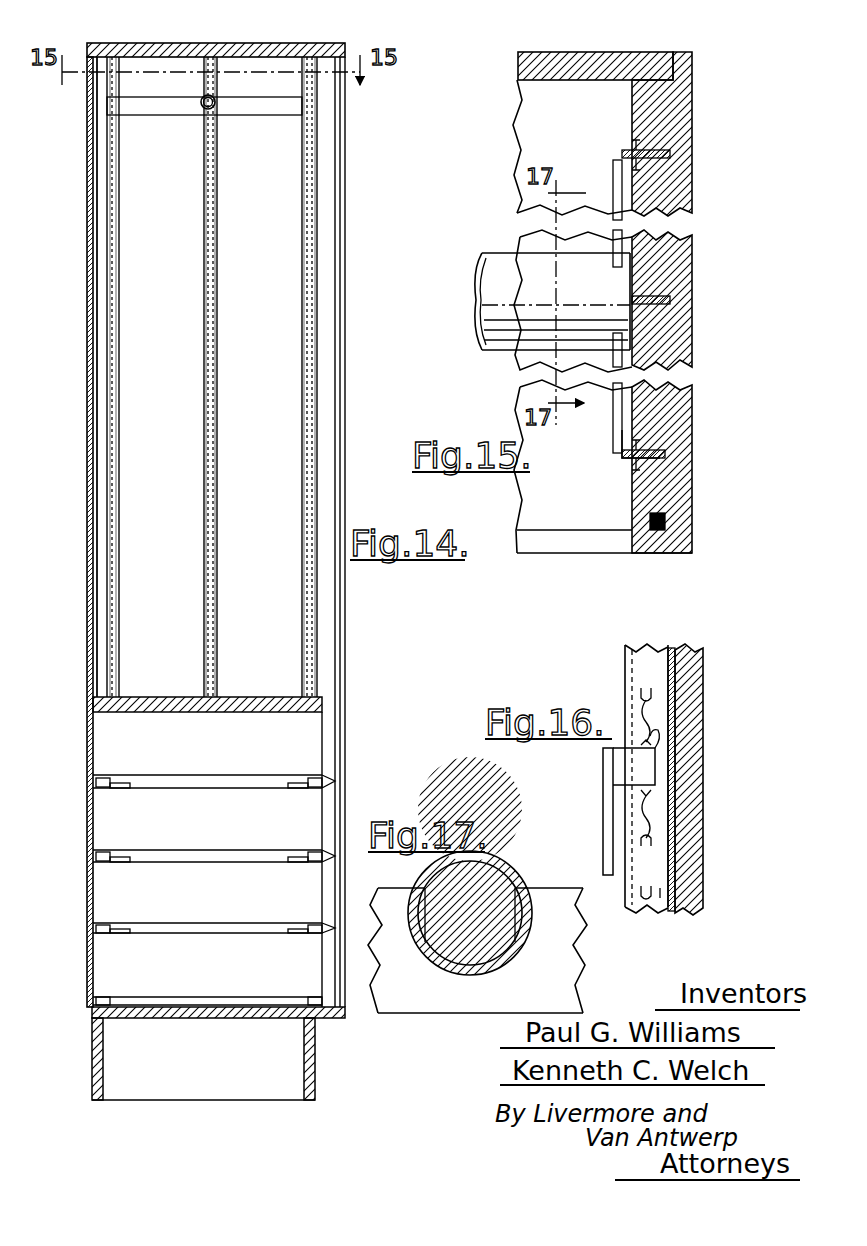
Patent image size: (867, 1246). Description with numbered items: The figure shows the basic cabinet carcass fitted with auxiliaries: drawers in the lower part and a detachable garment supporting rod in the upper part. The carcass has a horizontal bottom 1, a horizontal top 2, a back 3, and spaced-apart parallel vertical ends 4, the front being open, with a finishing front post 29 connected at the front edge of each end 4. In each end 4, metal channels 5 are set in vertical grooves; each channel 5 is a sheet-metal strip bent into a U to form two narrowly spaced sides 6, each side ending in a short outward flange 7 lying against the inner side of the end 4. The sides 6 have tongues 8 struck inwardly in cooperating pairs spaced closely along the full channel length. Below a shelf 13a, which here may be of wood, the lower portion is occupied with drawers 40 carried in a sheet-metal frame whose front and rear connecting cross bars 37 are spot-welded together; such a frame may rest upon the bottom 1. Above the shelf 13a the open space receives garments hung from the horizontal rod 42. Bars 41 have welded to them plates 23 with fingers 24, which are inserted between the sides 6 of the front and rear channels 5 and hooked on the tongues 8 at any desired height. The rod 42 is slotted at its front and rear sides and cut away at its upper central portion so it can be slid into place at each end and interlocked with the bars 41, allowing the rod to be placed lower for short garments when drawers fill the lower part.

In FIG. 14, the horizontal bottom 1 is at (190, 1012).
In FIG. 14, the horizontal top 2 is at (254, 50).
In FIG. 14, the back 3 is at (90, 340).
In FIG. 15, the back 3 is at (575, 54).
In FIG. 14, the vertical ends 4 is at (140, 245).
In FIG. 15, the vertical ends 4 is at (693, 100).
In FIG. 16, the vertical ends 4 is at (700, 804).
In FIG. 14, the metal channels 5 is at (113, 430).
In FIG. 15, the metal channels 5 is at (670, 153).
In FIG. 16, the metal channels 5 is at (676, 852).
In FIG. 15, the sides 6 is at (640, 150).
In FIG. 16, the sides 6 is at (660, 902).
In FIG. 14, the flange 7 is at (216, 318).
In FIG. 15, the flange 7 is at (621, 146).
In FIG. 16, the flange 7 is at (646, 778).
In FIG. 16, the tongues 8 is at (645, 902).
In FIG. 14, the shelf 13a is at (246, 697).
In FIG. 15, the plates 23 is at (628, 460).
In FIG. 16, the plates 23 is at (640, 767).
In FIG. 16, the fingers 24 is at (665, 740).
In FIG. 14, the finishing front post 29 is at (340, 205).
In FIG. 14, the cross bars 37 is at (108, 790).
In FIG. 14, the drawers 40 is at (315, 812).
In FIG. 14, the bars 41 is at (250, 108).
In FIG. 15, the bars 41 is at (615, 405).
In FIG. 16, the bars 41 is at (603, 840).
In FIG. 17, the bars 41 is at (551, 900).
In FIG. 14, the horizontal rod 42 is at (203, 108).
In FIG. 15, the horizontal rod 42 is at (497, 350).
In FIG. 17, the horizontal rod 42 is at (500, 860).